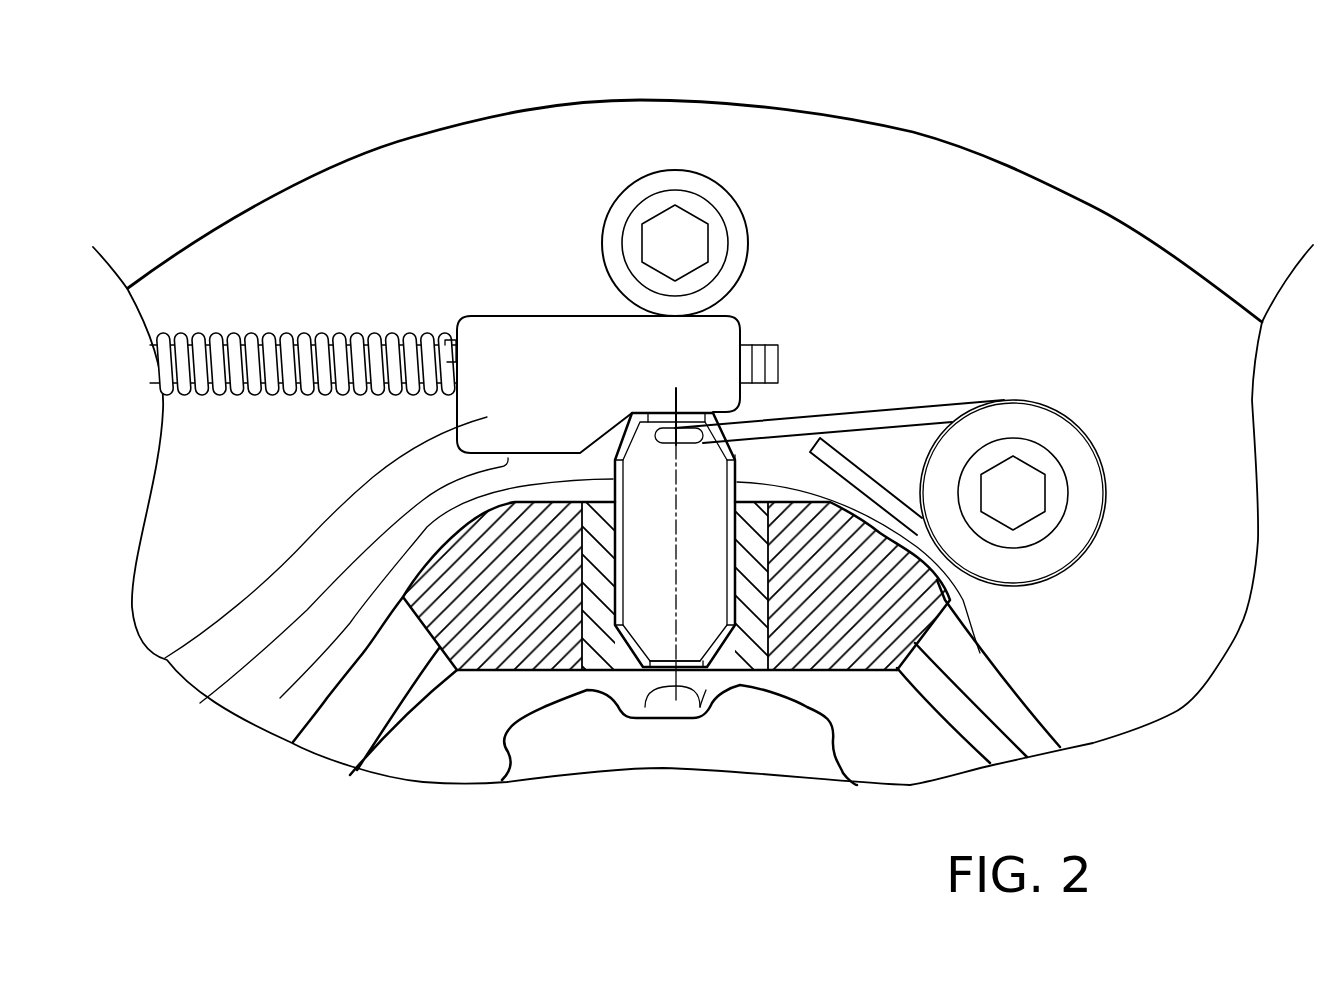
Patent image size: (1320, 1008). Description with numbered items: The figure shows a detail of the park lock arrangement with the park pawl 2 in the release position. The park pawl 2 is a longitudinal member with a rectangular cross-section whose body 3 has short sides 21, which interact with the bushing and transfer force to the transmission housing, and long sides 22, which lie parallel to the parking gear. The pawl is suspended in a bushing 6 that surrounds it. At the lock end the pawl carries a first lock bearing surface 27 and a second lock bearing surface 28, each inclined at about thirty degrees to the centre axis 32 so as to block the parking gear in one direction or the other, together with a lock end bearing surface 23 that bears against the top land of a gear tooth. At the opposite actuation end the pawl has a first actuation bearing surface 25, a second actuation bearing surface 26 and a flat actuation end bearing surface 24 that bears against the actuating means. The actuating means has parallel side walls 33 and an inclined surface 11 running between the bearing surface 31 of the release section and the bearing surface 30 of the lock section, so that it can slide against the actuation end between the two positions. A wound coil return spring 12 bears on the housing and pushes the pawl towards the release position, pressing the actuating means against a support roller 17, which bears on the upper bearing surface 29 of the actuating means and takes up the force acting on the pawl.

The park pawl 2 is at (758, 700).
The body 3 is at (643, 592).
The bushing 6 is at (595, 580).
The inclined surface 11 is at (457, 297).
The return spring 12 is at (897, 420).
The support roller 17 is at (657, 173).
The short sides 21 is at (742, 483).
The long sides 22 is at (690, 632).
The lock end bearing surface 23 is at (691, 670).
The actuation end bearing surface 24 is at (687, 413).
The first actuation bearing surface 25 is at (604, 448).
The second actuation bearing surface 26 is at (740, 457).
The first lock bearing surface 27 is at (616, 670).
The second lock bearing surface 28 is at (733, 670).
The upper bearing surface 29 is at (520, 314).
The bearing surface of the lock section 30 is at (200, 703).
The bearing surface of the release section 31 is at (601, 441).
The centre axis 32 is at (645, 707).
The side walls 33 is at (183, 648).